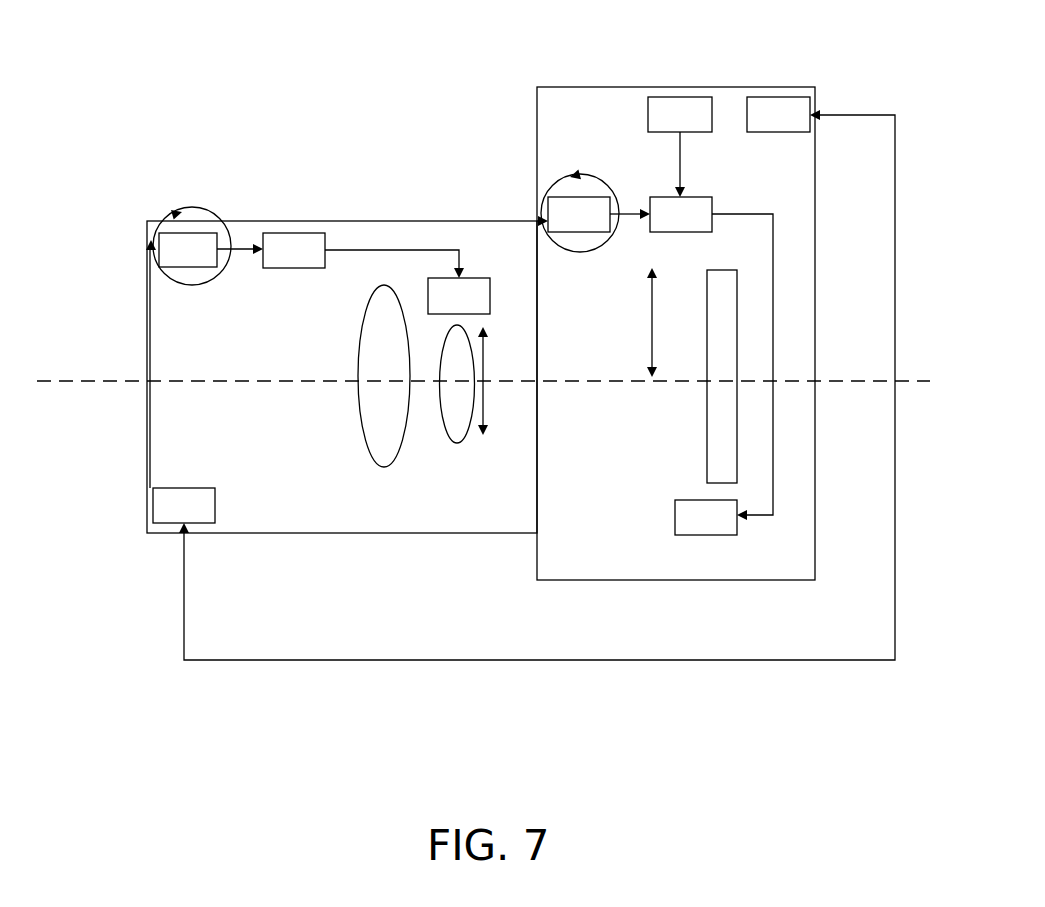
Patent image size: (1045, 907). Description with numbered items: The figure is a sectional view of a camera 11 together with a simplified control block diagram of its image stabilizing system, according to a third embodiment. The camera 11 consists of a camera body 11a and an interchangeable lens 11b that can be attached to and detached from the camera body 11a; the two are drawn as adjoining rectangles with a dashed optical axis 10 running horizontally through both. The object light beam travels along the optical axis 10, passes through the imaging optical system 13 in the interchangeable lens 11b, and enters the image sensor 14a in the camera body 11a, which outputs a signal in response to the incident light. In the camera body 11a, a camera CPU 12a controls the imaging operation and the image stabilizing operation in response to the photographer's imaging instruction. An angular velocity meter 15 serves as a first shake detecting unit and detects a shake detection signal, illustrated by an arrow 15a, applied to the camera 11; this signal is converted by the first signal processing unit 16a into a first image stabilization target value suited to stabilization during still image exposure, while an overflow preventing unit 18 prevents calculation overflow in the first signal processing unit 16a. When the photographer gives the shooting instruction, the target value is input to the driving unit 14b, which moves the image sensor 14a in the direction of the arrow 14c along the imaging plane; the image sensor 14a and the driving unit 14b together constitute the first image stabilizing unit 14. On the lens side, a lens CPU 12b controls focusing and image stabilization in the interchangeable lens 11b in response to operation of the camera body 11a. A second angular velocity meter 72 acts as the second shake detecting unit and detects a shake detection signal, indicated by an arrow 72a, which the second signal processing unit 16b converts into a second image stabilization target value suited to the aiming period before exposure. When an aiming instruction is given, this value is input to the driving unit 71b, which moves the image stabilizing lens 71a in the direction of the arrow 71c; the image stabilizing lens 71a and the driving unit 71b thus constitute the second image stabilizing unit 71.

The optical axis 10 is at (73, 382).
The camera 11 is at (278, 108).
The camera body 11a is at (618, 87).
The interchangeable lens 11b is at (437, 533).
The camera CPU 12a is at (783, 97).
The lens CPU 12b is at (153, 488).
The imaging optical system 13 is at (378, 428).
The first image stabilizing unit 14 is at (718, 453).
The image sensor 14a is at (707, 433).
The driving unit 14b is at (713, 535).
The arrow 14c is at (652, 332).
The angular velocity meter 15 is at (556, 197).
The arrow 15a is at (541, 218).
The first signal processing unit 16a is at (680, 197).
The second signal processing unit 16b is at (273, 233).
The overflow preventing unit 18 is at (677, 97).
The second image stabilizing unit 71 is at (504, 421).
The image stabilizing lens 71a is at (457, 413).
The driving unit 71b is at (477, 278).
The arrow 71c is at (483, 342).
The angular velocity meter 72 is at (170, 240).
The arrow 72a is at (182, 212).